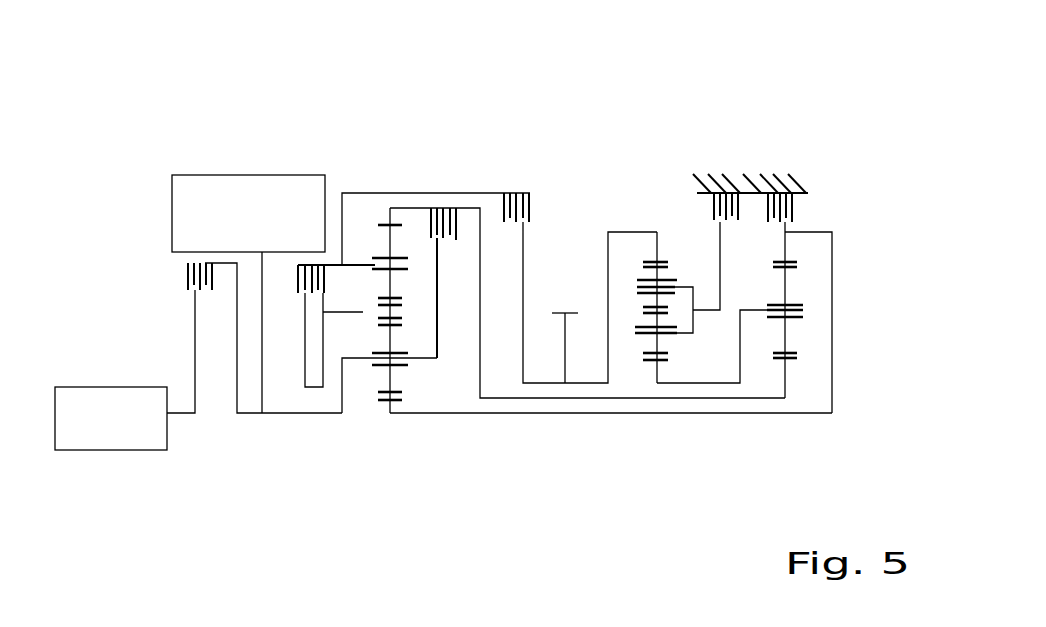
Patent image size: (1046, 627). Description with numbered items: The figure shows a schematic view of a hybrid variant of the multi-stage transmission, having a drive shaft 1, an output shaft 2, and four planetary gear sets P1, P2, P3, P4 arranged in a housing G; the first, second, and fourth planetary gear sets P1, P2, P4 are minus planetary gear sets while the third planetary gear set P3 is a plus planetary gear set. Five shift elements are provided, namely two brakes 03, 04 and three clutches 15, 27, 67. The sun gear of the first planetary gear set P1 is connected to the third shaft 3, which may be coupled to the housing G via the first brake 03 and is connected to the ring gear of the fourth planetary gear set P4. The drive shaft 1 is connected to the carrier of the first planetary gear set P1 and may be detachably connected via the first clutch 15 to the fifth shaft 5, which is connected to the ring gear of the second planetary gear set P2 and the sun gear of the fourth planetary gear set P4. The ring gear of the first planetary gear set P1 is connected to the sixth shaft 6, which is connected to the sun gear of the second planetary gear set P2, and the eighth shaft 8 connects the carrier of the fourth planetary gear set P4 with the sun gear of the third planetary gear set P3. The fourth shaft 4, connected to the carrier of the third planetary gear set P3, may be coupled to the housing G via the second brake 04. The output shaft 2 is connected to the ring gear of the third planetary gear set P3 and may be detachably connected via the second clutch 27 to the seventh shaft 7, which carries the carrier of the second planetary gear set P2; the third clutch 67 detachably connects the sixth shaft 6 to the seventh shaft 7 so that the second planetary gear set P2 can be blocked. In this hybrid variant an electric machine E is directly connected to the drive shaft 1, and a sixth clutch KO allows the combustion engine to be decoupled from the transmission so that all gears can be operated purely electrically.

The drive shaft 1 is at (282, 413).
The electric machine E is at (231, 175).
The sixth clutch KO is at (187, 264).
The third clutch 67 is at (313, 293).
The sixth shaft 6 is at (363, 312).
The first planetary gear set P1 is at (390, 455).
The second planetary gear set P2 is at (390, 155).
The third planetary gear set P3 is at (655, 152).
The fourth planetary gear set P4 is at (785, 152).
The fifth shaft 5 is at (390, 210).
The seventh shaft 7 is at (425, 207).
The first clutch 15 is at (455, 205).
The second clutch 27 is at (523, 193).
The output shaft 2 is at (640, 232).
The fourth shaft 4 is at (708, 312).
The second brake 04 is at (730, 193).
The housing G is at (787, 177).
The first brake 03 is at (790, 196).
The third shaft 3 is at (788, 247).
The eighth shaft 8 is at (803, 310).